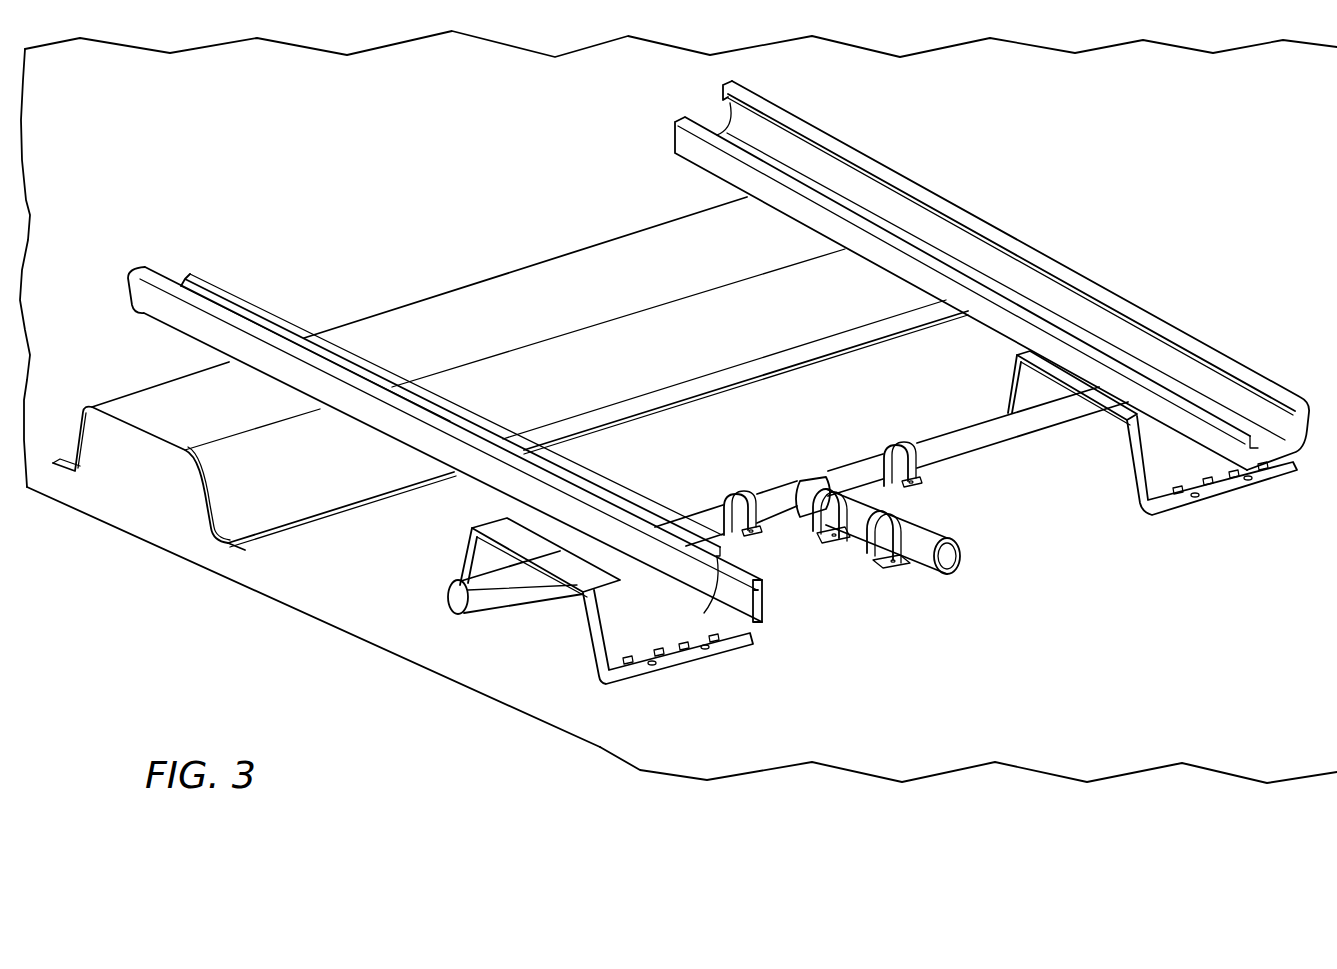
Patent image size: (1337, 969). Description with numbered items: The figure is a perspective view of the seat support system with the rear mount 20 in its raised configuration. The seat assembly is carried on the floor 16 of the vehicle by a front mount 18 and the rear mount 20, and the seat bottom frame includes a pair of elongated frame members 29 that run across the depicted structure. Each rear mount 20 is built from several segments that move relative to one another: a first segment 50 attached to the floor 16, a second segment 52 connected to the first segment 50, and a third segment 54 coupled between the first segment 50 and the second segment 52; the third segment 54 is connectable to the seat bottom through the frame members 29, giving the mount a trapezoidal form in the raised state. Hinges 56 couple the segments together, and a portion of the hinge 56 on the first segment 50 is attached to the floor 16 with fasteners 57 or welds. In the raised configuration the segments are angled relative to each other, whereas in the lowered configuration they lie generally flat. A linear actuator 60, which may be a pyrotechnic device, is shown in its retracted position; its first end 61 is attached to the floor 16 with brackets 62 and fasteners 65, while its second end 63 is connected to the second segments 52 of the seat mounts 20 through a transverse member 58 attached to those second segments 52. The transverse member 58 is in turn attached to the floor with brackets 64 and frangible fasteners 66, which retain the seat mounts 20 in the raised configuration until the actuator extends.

The floor 16 is at (353, 581).
The front mount 18 is at (145, 400).
The rear mount 20 is at (856, 532).
The frame members 29 is at (153, 280).
The first segment 50 is at (608, 628).
The second segment 52 is at (465, 556).
The third segment 54 is at (580, 573).
The hinges 56 is at (605, 490).
The fasteners 57 is at (652, 675).
The transverse member 58 is at (845, 470).
The linear actuator 60 is at (927, 558).
The first end 61 is at (957, 555).
The brackets 62 is at (915, 525).
The second end 63 is at (812, 488).
The brackets 64 is at (726, 498).
The fasteners 65 is at (885, 566).
The frangible fasteners 66 is at (748, 521).